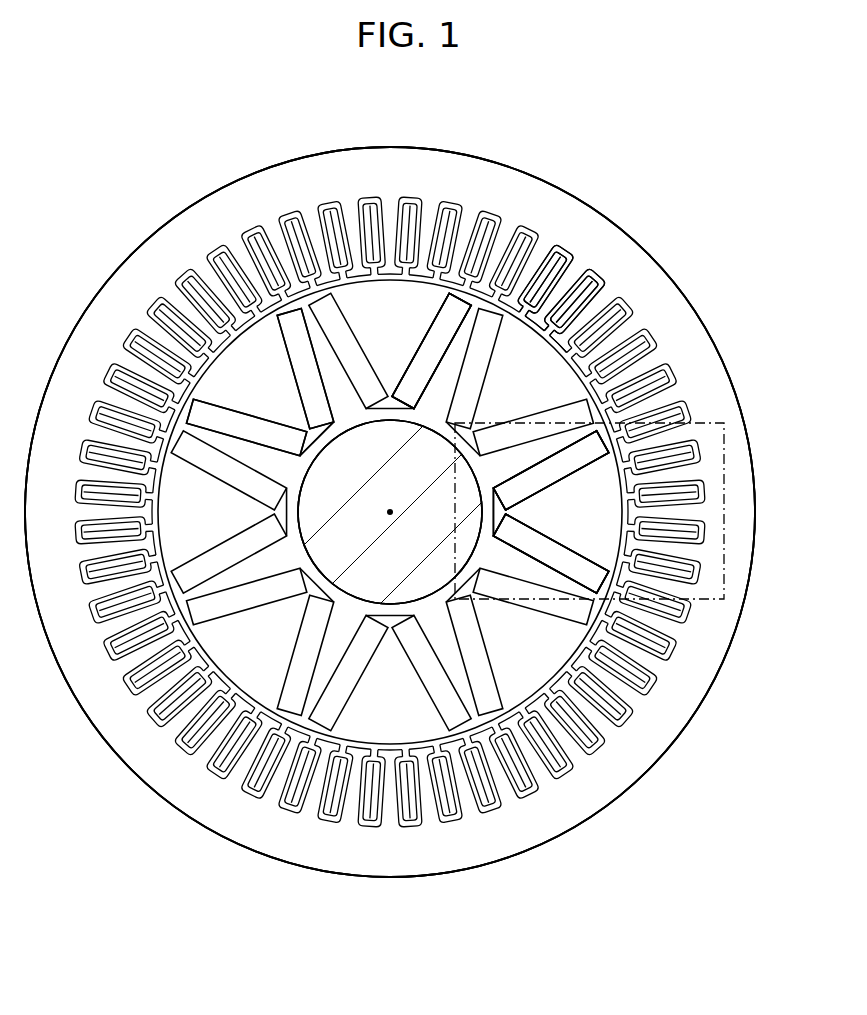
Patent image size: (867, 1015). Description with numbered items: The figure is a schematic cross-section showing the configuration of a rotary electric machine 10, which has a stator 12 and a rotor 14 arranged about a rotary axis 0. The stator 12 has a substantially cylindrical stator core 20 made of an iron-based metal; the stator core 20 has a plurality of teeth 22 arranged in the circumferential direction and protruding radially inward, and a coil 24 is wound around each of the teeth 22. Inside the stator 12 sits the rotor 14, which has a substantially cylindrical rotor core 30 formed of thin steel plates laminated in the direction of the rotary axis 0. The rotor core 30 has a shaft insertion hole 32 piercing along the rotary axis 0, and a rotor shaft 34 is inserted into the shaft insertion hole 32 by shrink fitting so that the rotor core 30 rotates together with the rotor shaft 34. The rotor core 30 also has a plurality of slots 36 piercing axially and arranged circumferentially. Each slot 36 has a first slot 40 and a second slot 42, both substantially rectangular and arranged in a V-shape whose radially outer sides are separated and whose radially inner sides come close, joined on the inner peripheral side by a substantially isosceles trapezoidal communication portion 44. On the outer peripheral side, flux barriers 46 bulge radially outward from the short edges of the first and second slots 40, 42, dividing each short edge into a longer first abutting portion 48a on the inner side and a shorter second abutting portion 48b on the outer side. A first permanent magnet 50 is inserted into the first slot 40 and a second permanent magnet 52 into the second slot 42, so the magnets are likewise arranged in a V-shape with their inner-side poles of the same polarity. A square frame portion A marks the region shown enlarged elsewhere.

The rotary electric machine 10 is at (230, 115).
The stator 12 is at (518, 167).
The rotor 14 is at (655, 362).
The stator core 20 is at (605, 250).
The teeth 22 is at (532, 323).
The coil 24 is at (537, 313).
The rotor core 30 is at (232, 357).
The shaft insertion hole 32 is at (365, 450).
The rotor shaft 34 is at (323, 508).
The rotary axis 0 is at (384, 497).
The communication portion 44 is at (481, 508).
The slot 36 is at (556, 498).
The first permanent magnet 50 is at (527, 483).
The second permanent magnet 52 is at (527, 542).
The first slot 40 is at (550, 447).
The second slot 42 is at (552, 568).
The flux barriers 46 is at (467, 290).
The first abutting portion 48a is at (450, 299).
The second abutting portion 48b is at (461, 308).
The square frame portion A is at (727, 423).